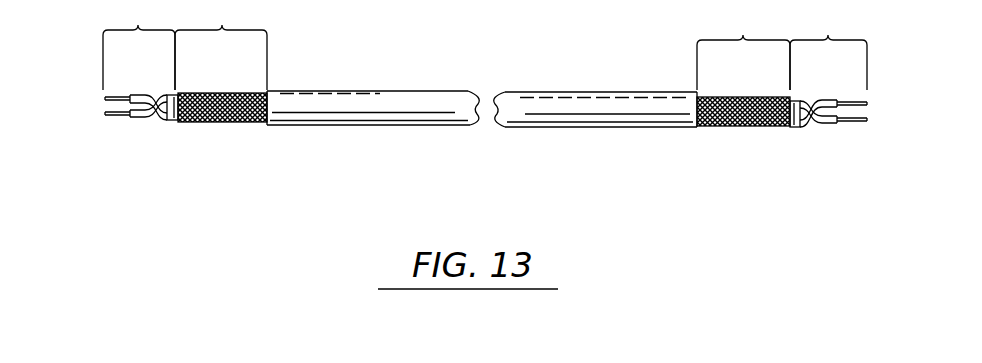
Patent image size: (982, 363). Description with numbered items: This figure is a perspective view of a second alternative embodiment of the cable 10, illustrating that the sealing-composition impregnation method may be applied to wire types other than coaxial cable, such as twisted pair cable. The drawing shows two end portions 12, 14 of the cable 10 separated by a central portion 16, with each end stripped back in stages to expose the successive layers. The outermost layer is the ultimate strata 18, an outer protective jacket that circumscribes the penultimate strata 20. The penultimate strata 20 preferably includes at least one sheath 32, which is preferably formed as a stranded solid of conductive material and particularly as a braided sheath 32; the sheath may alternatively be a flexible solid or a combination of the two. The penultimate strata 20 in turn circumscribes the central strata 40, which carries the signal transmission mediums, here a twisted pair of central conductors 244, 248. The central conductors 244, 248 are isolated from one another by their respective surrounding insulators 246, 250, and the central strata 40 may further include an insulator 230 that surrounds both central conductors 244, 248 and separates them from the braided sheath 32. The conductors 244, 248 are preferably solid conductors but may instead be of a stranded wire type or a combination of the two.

The cable 10 is at (532, 72).
The first end portion 12 is at (190, 216).
The second end portion 14 is at (777, 190).
The central portion 16 is at (541, 163).
The ultimate strata 18 is at (402, 150).
The penultimate strata 20 is at (482, 45).
The braided sheath 32 is at (253, 122).
The central strata 40 is at (485, 45).
The insulator 230 is at (170, 116).
The central conductor 244 is at (105, 98).
The insulator 246 is at (158, 121).
The central conductor 248 is at (113, 114).
The insulator 250 is at (143, 118).